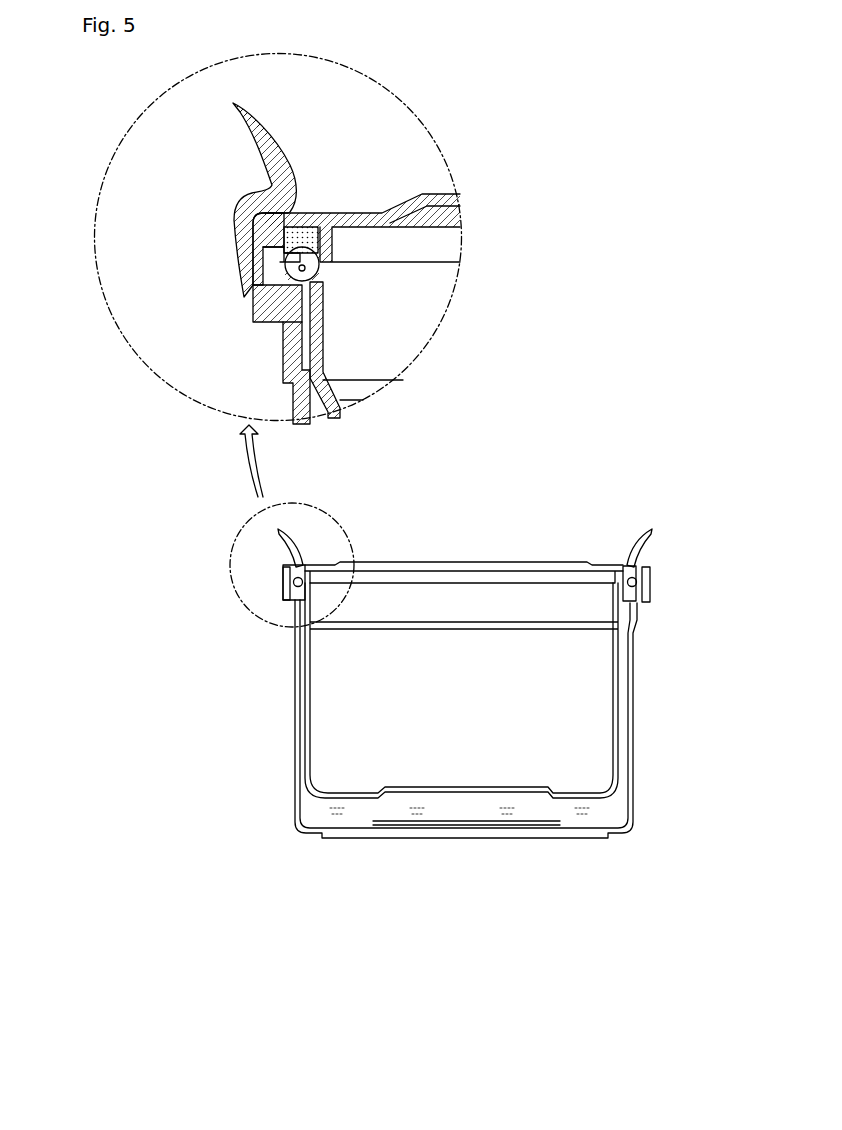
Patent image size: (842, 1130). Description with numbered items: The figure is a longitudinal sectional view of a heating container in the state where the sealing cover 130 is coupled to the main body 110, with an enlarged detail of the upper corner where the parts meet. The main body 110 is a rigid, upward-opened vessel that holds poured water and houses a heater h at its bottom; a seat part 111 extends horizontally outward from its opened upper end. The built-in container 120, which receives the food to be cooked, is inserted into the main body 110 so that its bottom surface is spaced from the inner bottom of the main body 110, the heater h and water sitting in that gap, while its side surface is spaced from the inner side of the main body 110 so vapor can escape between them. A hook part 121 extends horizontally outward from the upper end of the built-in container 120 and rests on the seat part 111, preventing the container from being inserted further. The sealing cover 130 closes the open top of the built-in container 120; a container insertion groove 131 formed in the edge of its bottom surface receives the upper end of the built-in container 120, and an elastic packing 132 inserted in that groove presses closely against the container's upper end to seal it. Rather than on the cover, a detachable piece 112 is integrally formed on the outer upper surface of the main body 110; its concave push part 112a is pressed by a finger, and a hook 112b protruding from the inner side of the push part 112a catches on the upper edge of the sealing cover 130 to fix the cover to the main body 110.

The main body 110 is at (304, 430).
The seat part 111 is at (256, 295).
The detachable piece 112 is at (219, 215).
The push part 112a is at (257, 139).
The hook 112b is at (277, 146).
The built-in container 120 is at (343, 410).
The hook part 121 is at (255, 250).
The sealing cover 130 is at (383, 213).
The container insertion groove 131 is at (306, 258).
The packing 132 is at (304, 226).
The heater h is at (460, 834).